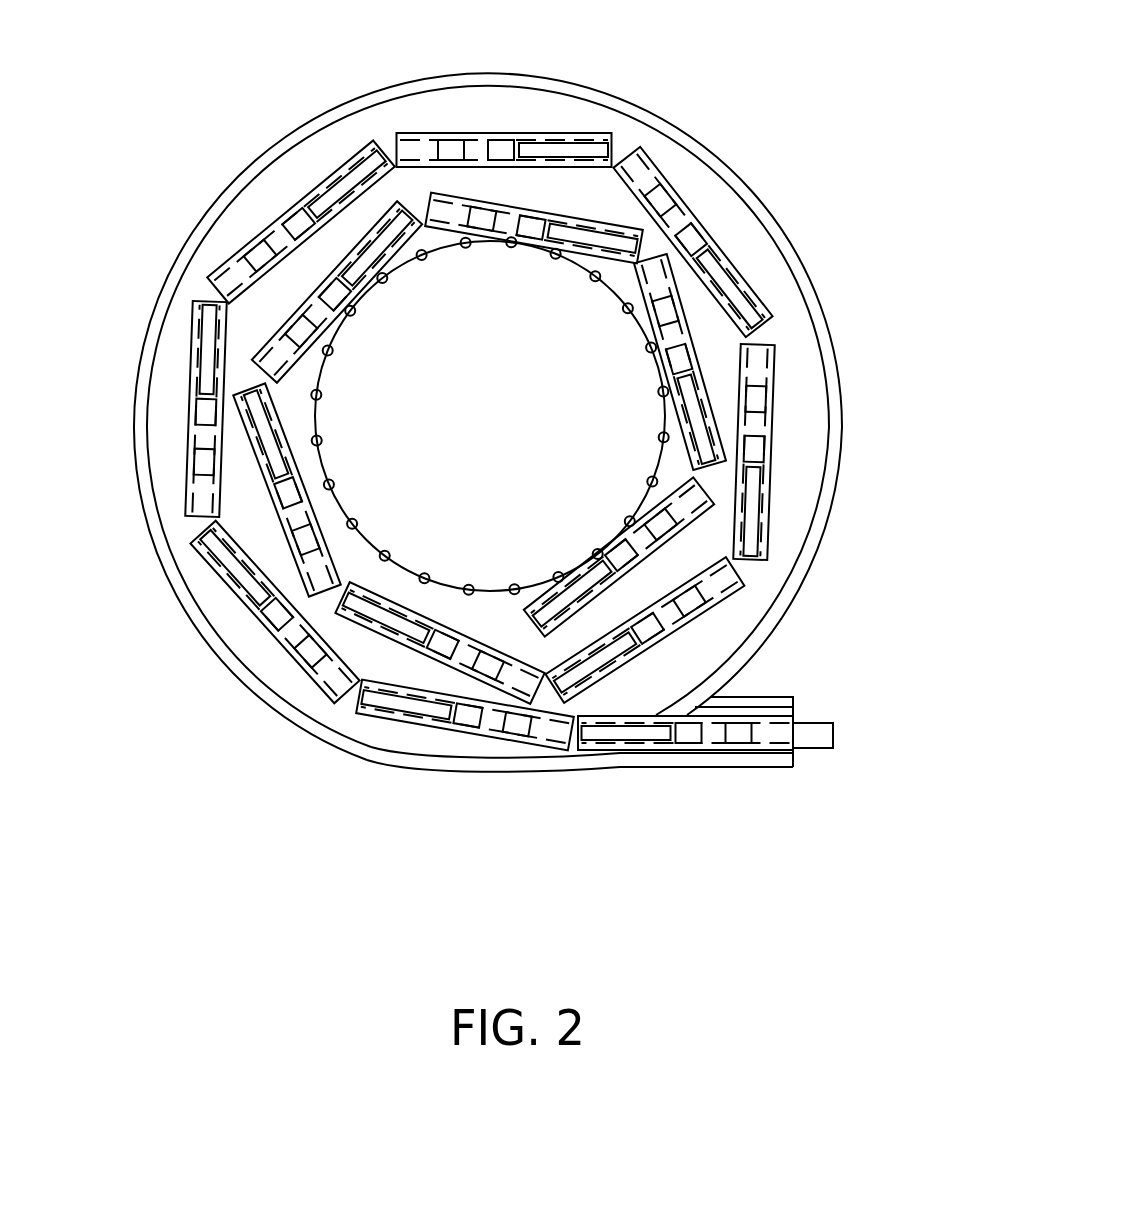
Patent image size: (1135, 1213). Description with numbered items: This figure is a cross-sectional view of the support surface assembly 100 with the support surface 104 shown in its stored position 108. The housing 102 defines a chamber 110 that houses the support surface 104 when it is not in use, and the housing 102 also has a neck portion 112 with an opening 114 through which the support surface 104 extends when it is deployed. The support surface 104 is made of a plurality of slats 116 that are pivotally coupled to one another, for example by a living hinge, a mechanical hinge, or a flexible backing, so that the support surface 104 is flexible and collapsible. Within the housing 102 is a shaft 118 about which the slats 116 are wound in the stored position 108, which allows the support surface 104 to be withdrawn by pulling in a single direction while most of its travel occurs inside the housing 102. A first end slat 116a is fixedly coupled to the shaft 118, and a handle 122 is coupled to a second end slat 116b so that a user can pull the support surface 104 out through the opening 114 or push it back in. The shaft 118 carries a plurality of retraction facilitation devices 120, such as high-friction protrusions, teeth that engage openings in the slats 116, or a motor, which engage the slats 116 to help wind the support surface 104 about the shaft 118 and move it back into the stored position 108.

The support surface assembly 100 is at (822, 65).
The housing 102 is at (660, 125).
The support surface 104 is at (797, 481).
The stored position 108 is at (240, 636).
The chamber 110 is at (735, 205).
The neck portion 112 is at (660, 767).
The opening 114 is at (805, 705).
The slats 116 is at (390, 635).
The first end slat 116a is at (648, 550).
The second end slat 116b is at (723, 750).
The shaft 118 is at (513, 420).
The retraction facilitation devices 120 is at (317, 427).
The handle 122 is at (835, 749).